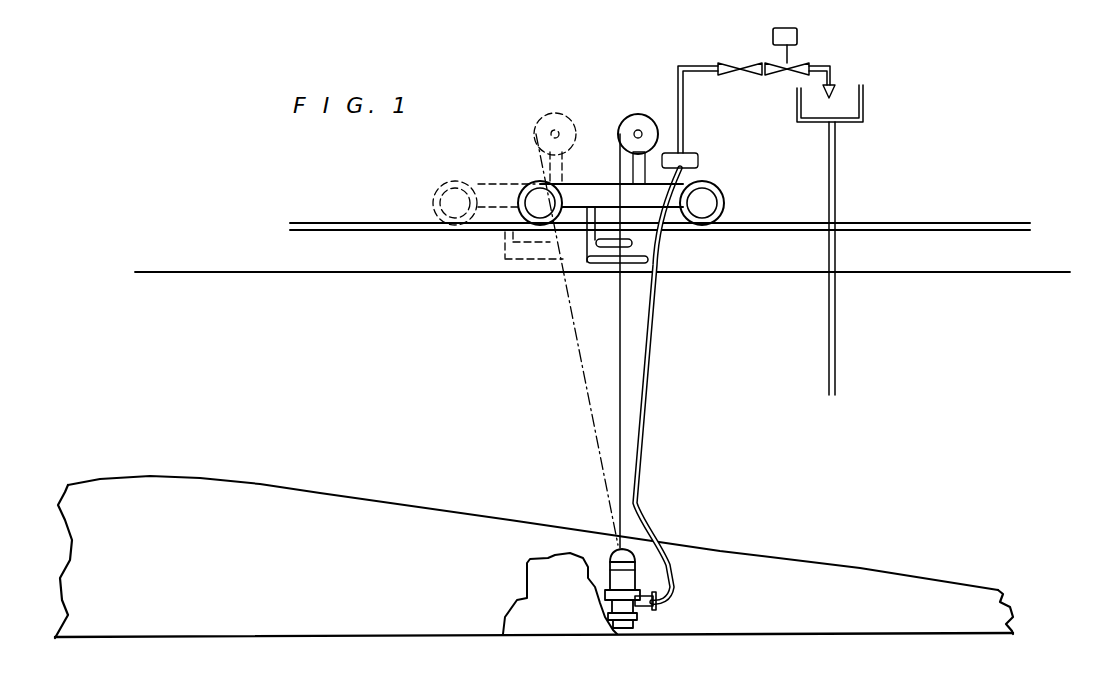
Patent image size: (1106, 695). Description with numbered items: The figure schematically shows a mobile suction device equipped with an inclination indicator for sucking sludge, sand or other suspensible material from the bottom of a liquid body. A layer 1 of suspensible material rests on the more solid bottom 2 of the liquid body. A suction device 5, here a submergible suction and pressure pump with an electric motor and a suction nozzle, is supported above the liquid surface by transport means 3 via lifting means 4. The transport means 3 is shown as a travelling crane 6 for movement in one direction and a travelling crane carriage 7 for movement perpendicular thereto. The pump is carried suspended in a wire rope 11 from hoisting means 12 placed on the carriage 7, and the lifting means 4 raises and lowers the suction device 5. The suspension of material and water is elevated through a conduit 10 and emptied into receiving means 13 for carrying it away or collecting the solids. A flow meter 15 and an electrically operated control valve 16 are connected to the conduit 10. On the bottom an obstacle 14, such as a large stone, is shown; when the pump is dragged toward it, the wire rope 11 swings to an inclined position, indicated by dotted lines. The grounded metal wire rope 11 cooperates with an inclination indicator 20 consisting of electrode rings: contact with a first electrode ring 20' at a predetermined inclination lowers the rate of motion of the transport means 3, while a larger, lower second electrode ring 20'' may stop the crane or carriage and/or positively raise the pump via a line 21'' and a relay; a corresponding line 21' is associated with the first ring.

The layer of suspensible material 1 is at (315, 515).
The bottom of liquid body 2 is at (394, 632).
The transport means 3 is at (716, 188).
The lifting means 4 is at (624, 120).
The suction device 5 is at (641, 575).
The travelling crane 6 is at (778, 222).
The travelling crane carriage 7 is at (498, 185).
The conduit 10 is at (650, 385).
The wire rope 11 is at (620, 358).
The hoisting means 12 is at (636, 114).
The receiving means 13 is at (865, 90).
The obstacle 14 is at (545, 573).
The flow meter 15 is at (741, 62).
The control valve 16 is at (790, 62).
The inclination indicator 20 is at (629, 259).
The first electrode ring 20' is at (573, 243).
The second electrode ring 20'' is at (602, 273).
The first sensing electrode 21' is at (598, 270).
The line 21'' is at (617, 284).